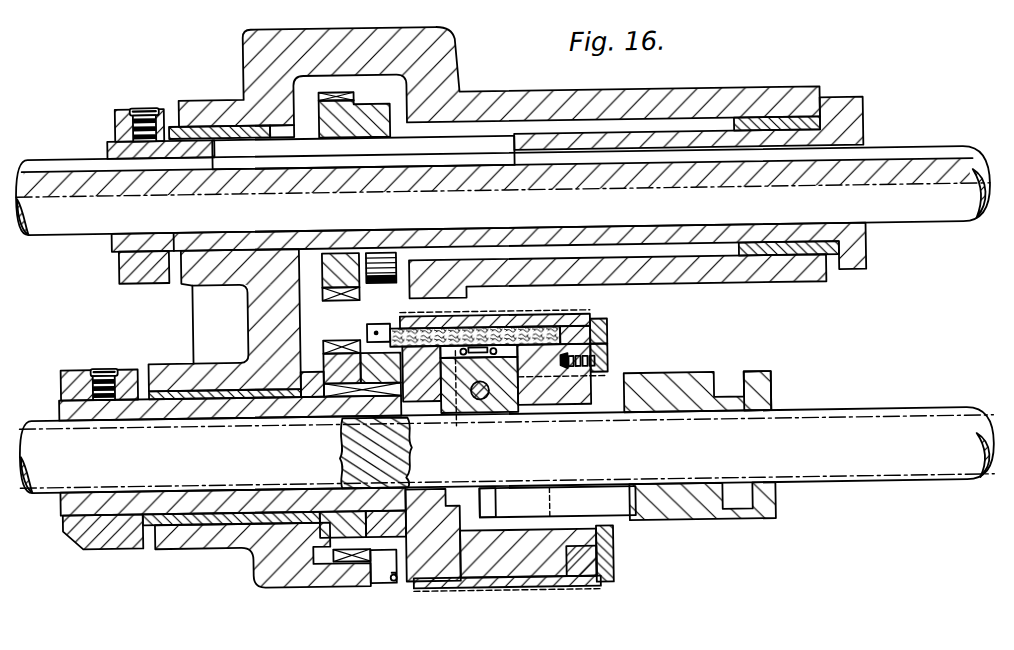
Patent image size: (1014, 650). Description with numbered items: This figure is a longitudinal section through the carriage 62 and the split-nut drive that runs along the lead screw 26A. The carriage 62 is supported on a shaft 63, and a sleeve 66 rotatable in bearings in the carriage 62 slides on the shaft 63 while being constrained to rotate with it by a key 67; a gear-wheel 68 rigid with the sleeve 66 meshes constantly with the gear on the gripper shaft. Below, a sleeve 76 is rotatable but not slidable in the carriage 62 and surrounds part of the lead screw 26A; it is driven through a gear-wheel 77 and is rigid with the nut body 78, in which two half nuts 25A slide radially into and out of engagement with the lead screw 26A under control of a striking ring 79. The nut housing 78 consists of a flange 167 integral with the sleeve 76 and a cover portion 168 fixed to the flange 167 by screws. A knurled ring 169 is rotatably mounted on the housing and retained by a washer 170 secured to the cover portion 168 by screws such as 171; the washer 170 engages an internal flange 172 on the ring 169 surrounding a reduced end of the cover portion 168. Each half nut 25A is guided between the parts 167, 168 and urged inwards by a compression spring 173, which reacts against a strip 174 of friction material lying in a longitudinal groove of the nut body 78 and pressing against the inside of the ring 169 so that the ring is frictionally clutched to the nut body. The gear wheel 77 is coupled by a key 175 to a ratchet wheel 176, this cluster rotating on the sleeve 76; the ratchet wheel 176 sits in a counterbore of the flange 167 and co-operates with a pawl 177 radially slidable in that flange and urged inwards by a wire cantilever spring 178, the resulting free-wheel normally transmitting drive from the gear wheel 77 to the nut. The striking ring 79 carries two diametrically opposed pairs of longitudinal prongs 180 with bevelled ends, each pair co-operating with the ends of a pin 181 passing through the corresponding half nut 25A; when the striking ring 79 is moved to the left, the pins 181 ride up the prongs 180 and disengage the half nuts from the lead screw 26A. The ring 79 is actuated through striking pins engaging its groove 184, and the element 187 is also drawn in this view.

The carriage 62 is at (247, 50).
The shaft 63 is at (936, 224).
The sleeve 66 is at (862, 241).
The key 67 is at (494, 136).
The gear-wheel 68 is at (361, 98).
The gear-wheel 77 is at (350, 341).
The sleeve 76 is at (183, 549).
The nut housing 78 is at (522, 560).
The striking ring 79 is at (715, 364).
The flange 167 is at (430, 568).
The cover portion 168 is at (483, 570).
The knurled ring 169 is at (574, 588).
The washer 170 is at (604, 333).
The screw 171 is at (605, 359).
The internal flange 172 is at (609, 556).
The compression spring 173 is at (507, 326).
The strip of friction material 174 is at (397, 328).
The key 175 is at (310, 416).
The ratchet wheel 176 is at (338, 486).
The pawl 177 is at (383, 582).
The wire cantilever spring 178 is at (390, 583).
The longitudinal prongs 180 is at (606, 398).
The pin 181 is at (455, 412).
The groove 184 is at (735, 379).
The nut 187 is at (104, 544).
The half nut 25A is at (498, 412).
The lead screw 26A is at (900, 394).